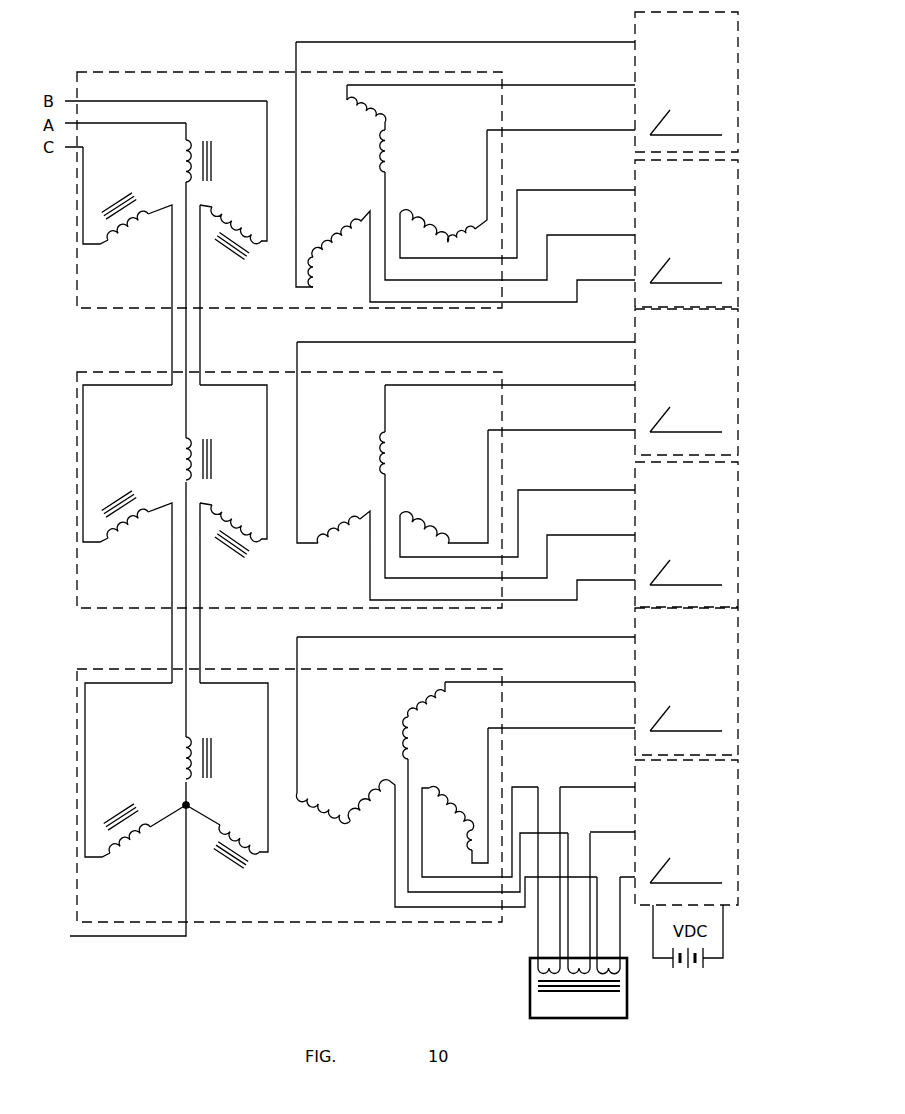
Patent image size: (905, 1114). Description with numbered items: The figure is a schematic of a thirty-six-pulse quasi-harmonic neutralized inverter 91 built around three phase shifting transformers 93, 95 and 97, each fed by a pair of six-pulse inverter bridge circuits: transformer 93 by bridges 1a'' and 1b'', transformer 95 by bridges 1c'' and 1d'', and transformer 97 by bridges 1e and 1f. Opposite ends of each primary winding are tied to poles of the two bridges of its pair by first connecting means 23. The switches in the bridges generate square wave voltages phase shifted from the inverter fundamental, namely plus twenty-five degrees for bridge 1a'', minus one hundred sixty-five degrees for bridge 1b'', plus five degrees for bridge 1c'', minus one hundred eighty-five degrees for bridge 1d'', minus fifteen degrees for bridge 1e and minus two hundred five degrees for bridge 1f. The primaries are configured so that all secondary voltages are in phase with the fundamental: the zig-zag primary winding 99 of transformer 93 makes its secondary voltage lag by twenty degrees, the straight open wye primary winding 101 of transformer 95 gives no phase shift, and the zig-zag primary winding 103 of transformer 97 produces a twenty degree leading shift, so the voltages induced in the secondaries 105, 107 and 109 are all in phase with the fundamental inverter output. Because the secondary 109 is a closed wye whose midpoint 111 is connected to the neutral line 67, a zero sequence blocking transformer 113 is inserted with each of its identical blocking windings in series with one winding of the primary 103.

The inverter 91 is at (273, 28).
The transformer 93 is at (167, 71).
The transformer 95 is at (118, 370).
The transformer 97 is at (120, 668).
The zig-zag primary winding 99 is at (432, 185).
The primary winding 101 is at (430, 487).
The zig-zag primary winding 103 is at (452, 772).
The secondary winding 105 is at (153, 242).
The secondary winding 107 is at (143, 468).
The secondary winding 109 is at (143, 778).
The midpoint 111 is at (185, 809).
The neutral line 67 is at (136, 938).
The zero sequence blocking transformer 113 is at (627, 997).
The first connecting means 23 is at (552, 37).
The six-pulse inverter bridge circuit 1a'' is at (704, 82).
The six-pulse inverter bridge circuit 1b'' is at (704, 233).
The six-pulse inverter bridge circuit 1c'' is at (703, 382).
The six-pulse inverter bridge circuit 1d'' is at (705, 534).
The six-pulse inverter bridge circuit 1e is at (738, 655).
The six-pulse inverter bridge circuit 1f is at (738, 812).